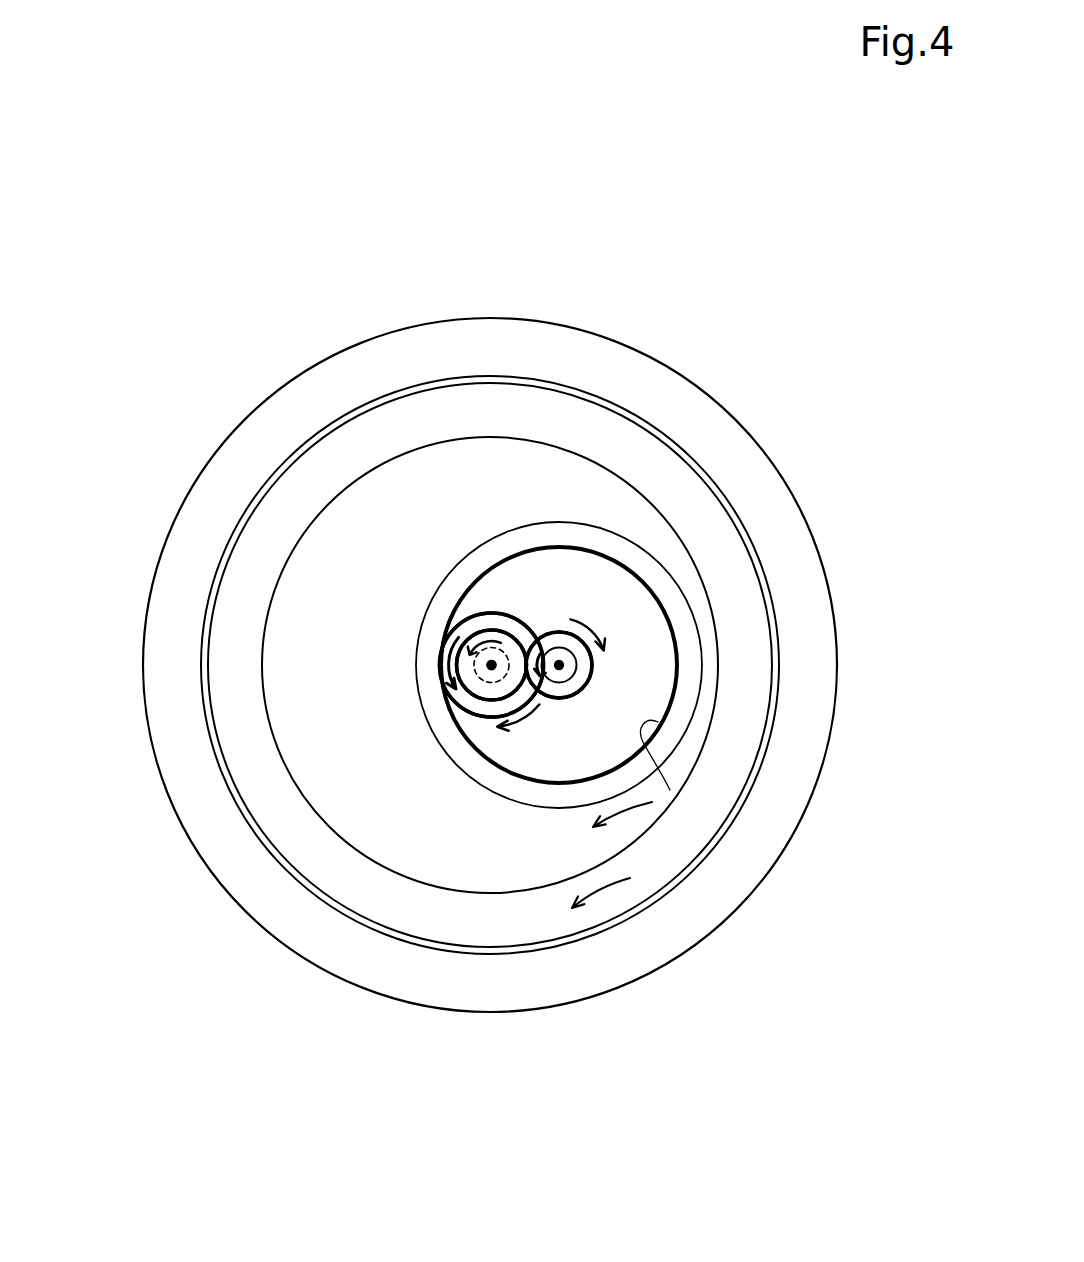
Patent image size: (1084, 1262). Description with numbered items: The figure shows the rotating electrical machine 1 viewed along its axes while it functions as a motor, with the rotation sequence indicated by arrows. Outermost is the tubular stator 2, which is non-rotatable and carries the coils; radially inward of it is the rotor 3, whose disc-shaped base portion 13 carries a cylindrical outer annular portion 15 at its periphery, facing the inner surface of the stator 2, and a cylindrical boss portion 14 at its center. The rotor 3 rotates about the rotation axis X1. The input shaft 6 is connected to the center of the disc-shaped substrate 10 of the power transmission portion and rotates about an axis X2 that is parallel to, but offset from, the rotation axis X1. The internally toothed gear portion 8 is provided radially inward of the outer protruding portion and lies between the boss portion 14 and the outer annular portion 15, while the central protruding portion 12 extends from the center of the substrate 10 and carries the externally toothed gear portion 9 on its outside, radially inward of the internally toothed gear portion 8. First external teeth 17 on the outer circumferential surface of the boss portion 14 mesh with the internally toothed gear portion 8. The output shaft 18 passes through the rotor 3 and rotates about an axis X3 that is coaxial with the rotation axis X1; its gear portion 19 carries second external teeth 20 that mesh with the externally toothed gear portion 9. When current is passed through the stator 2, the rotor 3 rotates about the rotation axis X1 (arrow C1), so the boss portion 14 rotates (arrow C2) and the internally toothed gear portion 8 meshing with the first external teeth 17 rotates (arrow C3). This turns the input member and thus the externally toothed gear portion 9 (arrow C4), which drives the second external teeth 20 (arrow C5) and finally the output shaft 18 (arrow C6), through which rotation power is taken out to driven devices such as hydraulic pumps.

The rotating electrical machine 1 is at (311, 311).
The stator 2 is at (228, 438).
The rotor 3 is at (232, 514).
The input shaft 6 is at (587, 685).
The internally toothed gear portion 8 is at (627, 756).
The externally toothed gear portion 9 is at (559, 665).
The substrate 10 is at (704, 649).
The central protruding portion 12 is at (591, 663).
The base portion 13 is at (298, 742).
The boss portion 14 is at (455, 703).
The outer annular portion 15 is at (263, 802).
The first external teeth 17 is at (482, 718).
The output shaft 18 is at (468, 702).
The gear portion 19 is at (512, 637).
The second external teeth 20 is at (477, 633).
The rotation axis X1 is at (492, 665).
The axis X2 is at (559, 665).
The axis X3 is at (492, 665).
The arrow C1 is at (601, 896).
The arrow C2 is at (525, 723).
The arrow C3 is at (628, 818).
The arrow C4 is at (597, 632).
The arrow C5 is at (454, 667).
The arrow C6 is at (440, 647).